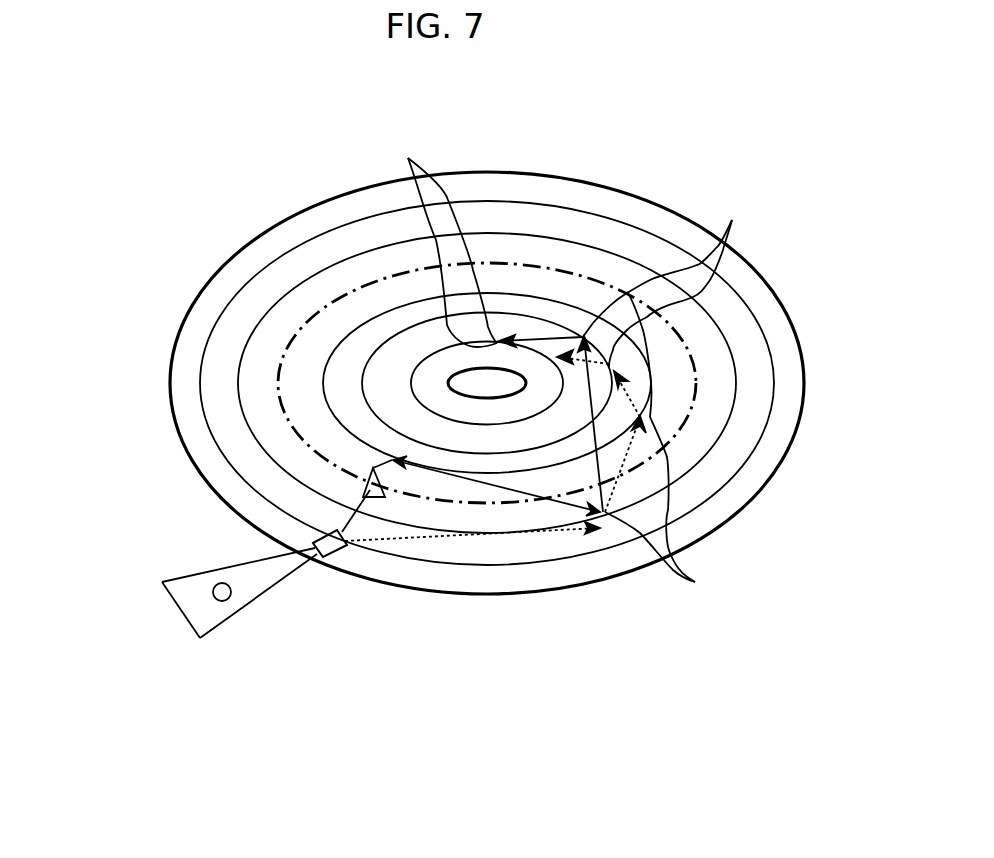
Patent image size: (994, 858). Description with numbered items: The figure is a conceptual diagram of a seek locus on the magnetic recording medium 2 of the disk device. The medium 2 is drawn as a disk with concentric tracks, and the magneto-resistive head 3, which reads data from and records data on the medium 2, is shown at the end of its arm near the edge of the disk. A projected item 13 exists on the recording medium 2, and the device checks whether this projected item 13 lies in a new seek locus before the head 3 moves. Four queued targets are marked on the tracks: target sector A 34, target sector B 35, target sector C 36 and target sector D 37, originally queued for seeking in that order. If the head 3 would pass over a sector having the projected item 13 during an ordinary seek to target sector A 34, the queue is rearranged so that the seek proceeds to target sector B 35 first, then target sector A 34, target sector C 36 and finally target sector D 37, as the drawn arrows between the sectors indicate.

The magnetic recording medium 2 is at (299, 218).
The magneto-resistive head 3 is at (342, 553).
The projected item 13 is at (377, 492).
The target sector A 34 is at (392, 460).
The target sector B 35 is at (687, 469).
The target sector C 36 is at (684, 257).
The target sector D 37 is at (424, 215).